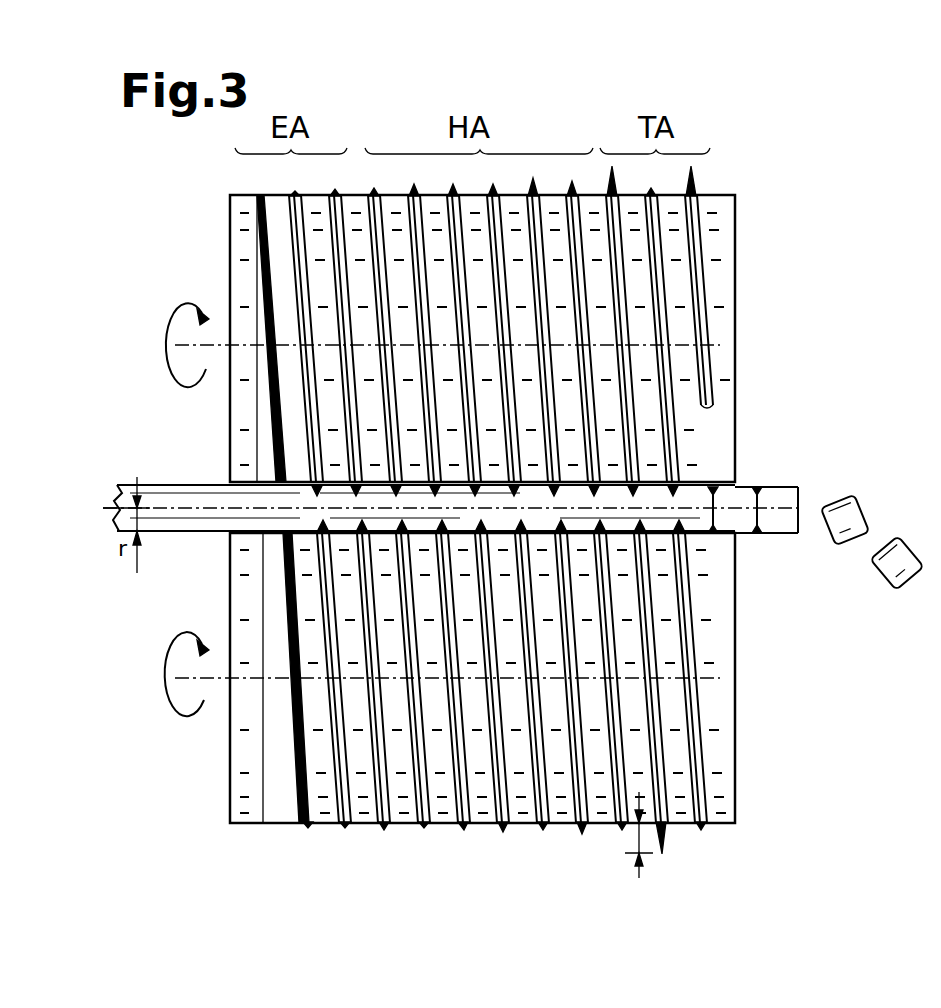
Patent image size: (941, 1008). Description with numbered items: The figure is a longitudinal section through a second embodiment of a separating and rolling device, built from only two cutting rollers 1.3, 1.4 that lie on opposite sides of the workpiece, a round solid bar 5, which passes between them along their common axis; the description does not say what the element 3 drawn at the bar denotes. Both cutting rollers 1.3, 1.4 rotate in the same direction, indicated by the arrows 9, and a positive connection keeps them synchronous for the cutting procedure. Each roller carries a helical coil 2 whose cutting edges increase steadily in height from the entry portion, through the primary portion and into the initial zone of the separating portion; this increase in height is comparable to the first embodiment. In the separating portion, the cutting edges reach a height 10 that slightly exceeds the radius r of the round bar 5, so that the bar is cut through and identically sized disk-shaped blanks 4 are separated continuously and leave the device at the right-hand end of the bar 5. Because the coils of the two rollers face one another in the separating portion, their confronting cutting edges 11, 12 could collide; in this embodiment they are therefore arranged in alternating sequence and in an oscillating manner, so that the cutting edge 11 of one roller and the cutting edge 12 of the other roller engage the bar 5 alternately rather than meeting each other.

The cutting roller 1.3 is at (252, 284).
The cutting roller 1.4 is at (246, 748).
The coil 2 is at (585, 375).
The shaft (screw blank) 3 is at (160, 507).
The disk-shaped blank 4 is at (885, 590).
The round solid bar 5 is at (206, 494).
The arrow indicating direction of rotation 9 is at (168, 352).
The height of cutting edges 10 is at (632, 832).
The cutting edge 11 is at (695, 172).
The cutting edge 12 is at (704, 824).